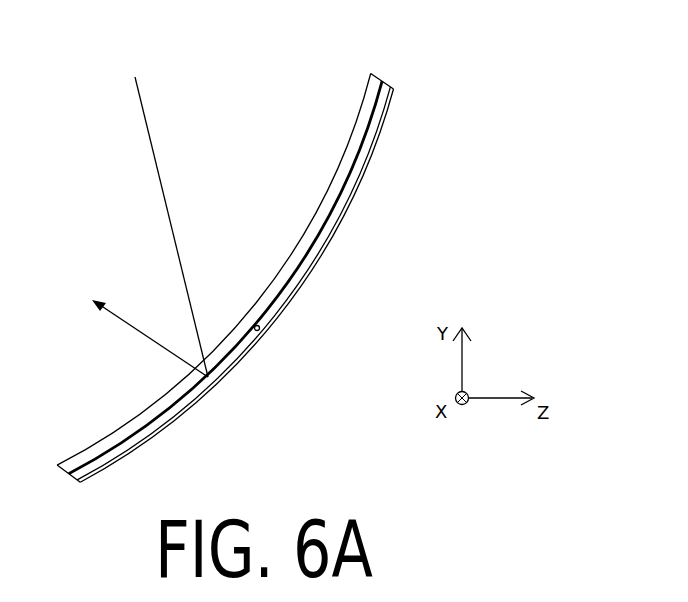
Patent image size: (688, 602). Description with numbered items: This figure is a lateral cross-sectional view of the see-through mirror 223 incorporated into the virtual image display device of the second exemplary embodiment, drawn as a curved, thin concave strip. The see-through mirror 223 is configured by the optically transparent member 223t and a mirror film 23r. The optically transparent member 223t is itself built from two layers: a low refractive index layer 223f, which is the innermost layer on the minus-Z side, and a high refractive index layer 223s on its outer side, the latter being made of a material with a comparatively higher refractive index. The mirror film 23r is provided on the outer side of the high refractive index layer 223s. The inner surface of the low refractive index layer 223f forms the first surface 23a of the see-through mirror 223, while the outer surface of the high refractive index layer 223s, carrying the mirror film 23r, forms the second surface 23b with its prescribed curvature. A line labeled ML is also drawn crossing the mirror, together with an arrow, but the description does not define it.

The see-through mirror 223 is at (255, 261).
The optically transparent member 223t is at (281, 171).
The low refractive index layer 223f is at (330, 208).
The high refractive index layer 223s is at (314, 256).
The mirror film 23r is at (356, 188).
The first surface 23a is at (289, 257).
The second surface 23b is at (259, 333).
The center line / optical axis line ML is at (152, 133).